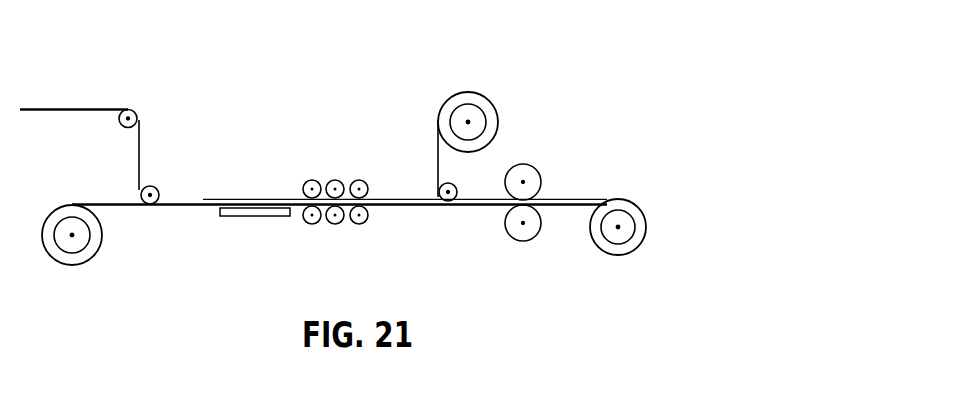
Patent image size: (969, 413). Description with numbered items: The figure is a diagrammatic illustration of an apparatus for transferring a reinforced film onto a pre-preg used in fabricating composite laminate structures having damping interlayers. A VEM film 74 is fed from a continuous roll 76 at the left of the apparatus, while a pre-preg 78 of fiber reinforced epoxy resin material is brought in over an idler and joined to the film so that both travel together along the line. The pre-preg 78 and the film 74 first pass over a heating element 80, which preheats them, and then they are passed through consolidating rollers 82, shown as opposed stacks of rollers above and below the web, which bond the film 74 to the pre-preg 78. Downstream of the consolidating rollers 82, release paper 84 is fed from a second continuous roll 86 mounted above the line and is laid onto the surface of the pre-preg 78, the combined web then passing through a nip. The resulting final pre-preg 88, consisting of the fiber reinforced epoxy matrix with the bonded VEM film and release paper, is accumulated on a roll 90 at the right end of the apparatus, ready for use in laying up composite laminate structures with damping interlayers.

The VEM film 74 is at (133, 207).
The continuous roll 76 is at (72, 258).
The pre-preg 78 is at (71, 110).
The heating element 80 is at (252, 217).
The consolidating rollers 82 is at (335, 179).
The release paper 84 is at (438, 153).
The continuous roll 86 is at (470, 110).
The final pre-preg 88 is at (568, 200).
The roll 90 is at (625, 232).